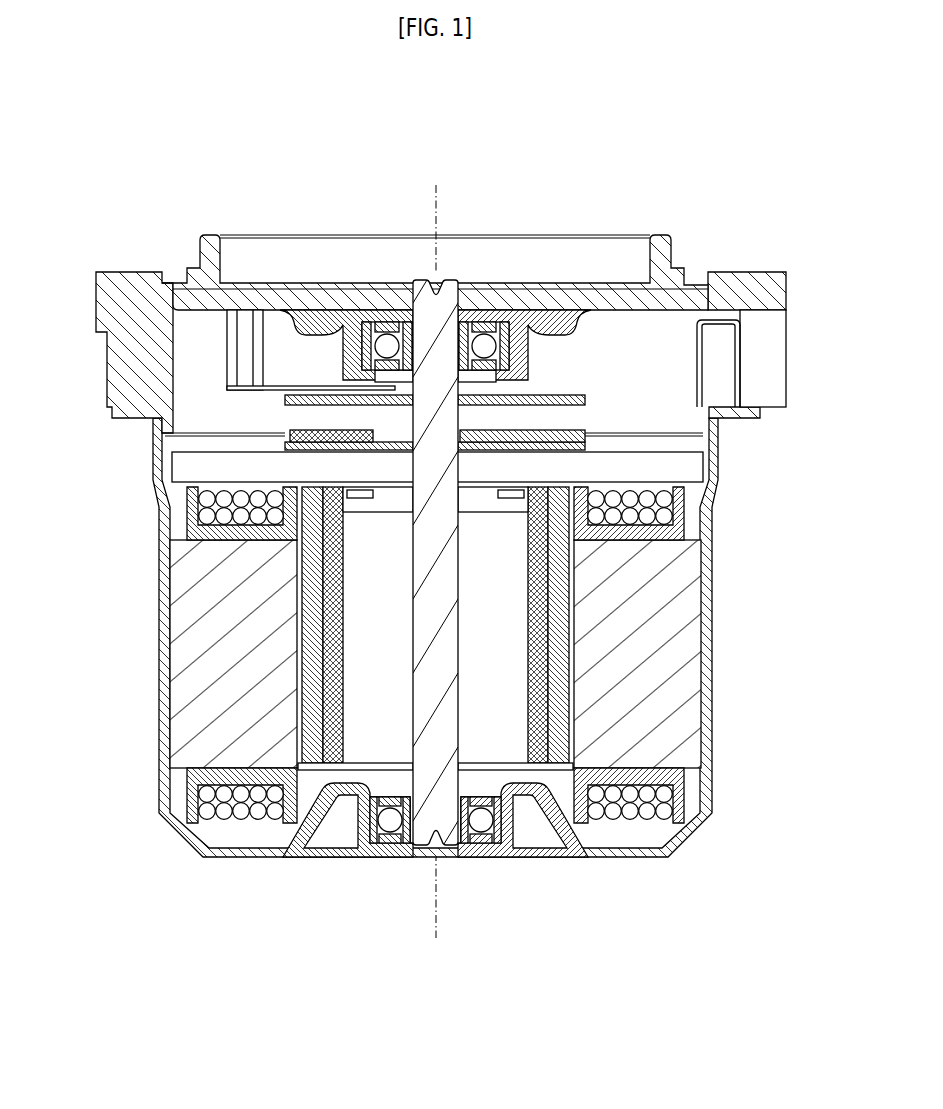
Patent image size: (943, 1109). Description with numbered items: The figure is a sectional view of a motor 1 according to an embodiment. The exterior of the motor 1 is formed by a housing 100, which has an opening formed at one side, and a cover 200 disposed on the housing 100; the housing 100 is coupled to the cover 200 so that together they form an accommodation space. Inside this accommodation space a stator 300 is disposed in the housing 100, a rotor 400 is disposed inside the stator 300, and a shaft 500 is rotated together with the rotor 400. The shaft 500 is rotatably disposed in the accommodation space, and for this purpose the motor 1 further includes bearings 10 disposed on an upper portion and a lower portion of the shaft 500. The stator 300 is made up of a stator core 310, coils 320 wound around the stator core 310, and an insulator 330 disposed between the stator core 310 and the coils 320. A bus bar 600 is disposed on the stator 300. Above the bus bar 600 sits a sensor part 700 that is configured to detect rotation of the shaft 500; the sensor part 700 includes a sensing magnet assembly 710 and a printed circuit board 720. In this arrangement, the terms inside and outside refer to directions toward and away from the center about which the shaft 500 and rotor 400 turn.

The motor 1 is at (66, 110).
The bearings 10 is at (510, 320).
The housing 100 is at (158, 438).
The cover 200 is at (97, 316).
The stator 300 is at (501, 655).
The stator core 310 is at (677, 579).
The coils 320 is at (648, 498).
The insulator 330 is at (678, 533).
The rotor 400 is at (363, 622).
The shaft 500 is at (437, 724).
The bus bar 600 is at (178, 474).
The sensor part 700 is at (556, 430).
The sensing magnet assembly 710 is at (593, 418).
The printed circuit board 720 is at (592, 395).